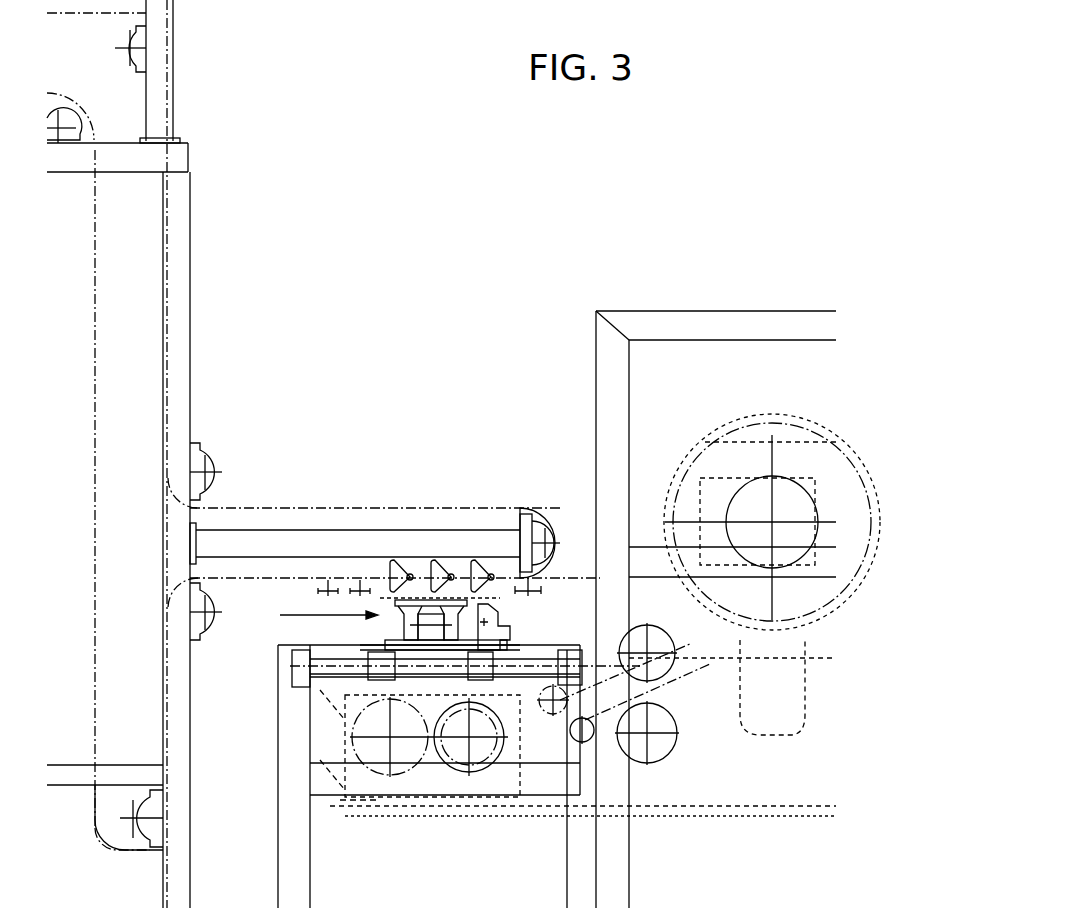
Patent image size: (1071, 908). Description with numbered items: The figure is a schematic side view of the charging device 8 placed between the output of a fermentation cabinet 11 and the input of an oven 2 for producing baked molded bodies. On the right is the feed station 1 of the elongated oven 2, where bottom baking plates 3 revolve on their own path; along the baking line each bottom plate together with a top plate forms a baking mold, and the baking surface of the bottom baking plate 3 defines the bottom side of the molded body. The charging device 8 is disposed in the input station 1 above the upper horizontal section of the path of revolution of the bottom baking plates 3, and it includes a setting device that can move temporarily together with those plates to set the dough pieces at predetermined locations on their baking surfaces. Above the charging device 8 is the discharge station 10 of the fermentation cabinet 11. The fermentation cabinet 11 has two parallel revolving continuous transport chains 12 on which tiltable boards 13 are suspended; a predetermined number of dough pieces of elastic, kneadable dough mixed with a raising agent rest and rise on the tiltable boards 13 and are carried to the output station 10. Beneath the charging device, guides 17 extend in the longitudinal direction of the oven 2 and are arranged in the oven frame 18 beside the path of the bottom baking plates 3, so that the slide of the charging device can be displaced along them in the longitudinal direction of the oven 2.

The feed station 1 is at (487, 492).
The oven 2 is at (690, 325).
The bottom baking plates 3 is at (690, 657).
The charging device 8 is at (317, 617).
The discharge station 10 is at (318, 500).
The fermentation cabinet 11 is at (178, 297).
The transport chains 12 is at (93, 452).
The tiltable boards 13 is at (405, 575).
The guides 17 is at (302, 680).
The oven frame 18 is at (296, 865).